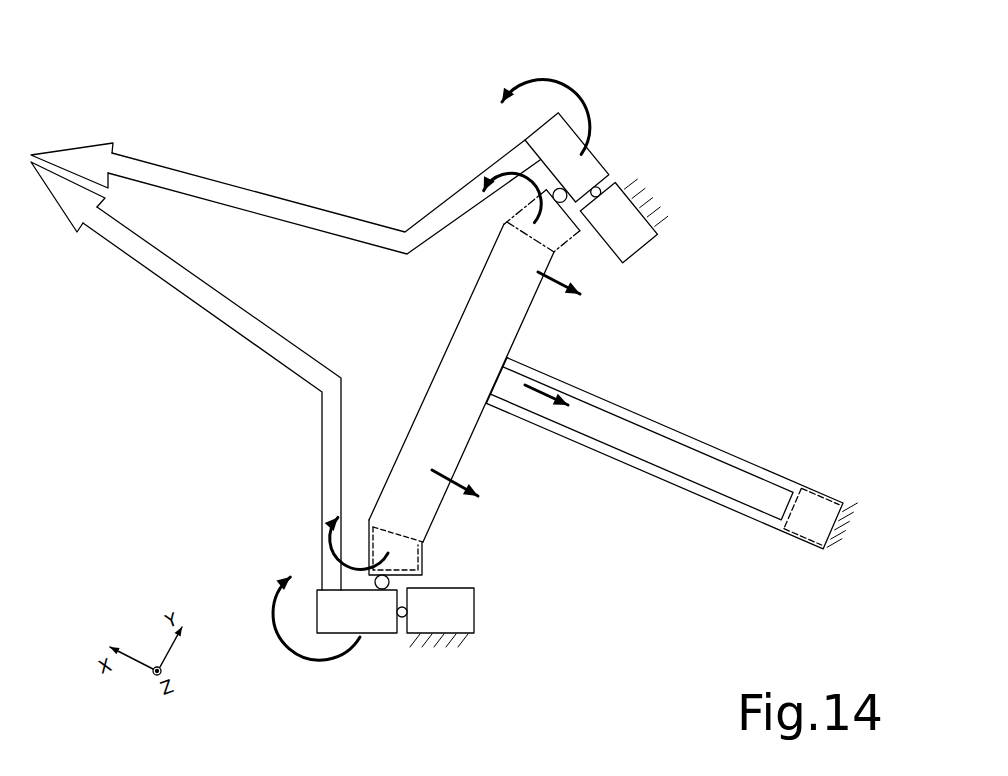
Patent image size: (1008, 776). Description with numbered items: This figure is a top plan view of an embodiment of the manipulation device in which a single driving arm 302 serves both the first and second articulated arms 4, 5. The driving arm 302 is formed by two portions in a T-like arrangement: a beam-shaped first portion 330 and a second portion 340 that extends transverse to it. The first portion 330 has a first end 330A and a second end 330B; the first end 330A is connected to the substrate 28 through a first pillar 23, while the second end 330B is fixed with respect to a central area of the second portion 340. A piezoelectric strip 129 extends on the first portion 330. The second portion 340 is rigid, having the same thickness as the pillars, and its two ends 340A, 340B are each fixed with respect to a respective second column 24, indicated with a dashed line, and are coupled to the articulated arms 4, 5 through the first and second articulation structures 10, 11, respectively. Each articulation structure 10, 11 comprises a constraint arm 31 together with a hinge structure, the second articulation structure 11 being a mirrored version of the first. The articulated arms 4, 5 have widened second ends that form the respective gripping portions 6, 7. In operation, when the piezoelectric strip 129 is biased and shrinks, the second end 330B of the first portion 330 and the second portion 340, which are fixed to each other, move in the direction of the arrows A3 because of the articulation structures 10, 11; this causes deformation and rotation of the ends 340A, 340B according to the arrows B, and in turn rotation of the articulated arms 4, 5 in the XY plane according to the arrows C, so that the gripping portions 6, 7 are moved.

The first articulated arm 4 is at (212, 190).
The second articulated arm 5 is at (203, 302).
The gripping portion 6 is at (80, 153).
The gripping portion 7 is at (65, 205).
The first articulation structure 10 is at (613, 177).
The second articulation structure 11 is at (397, 641).
The first pillar 23 is at (807, 543).
The second column 24 is at (423, 552).
The substrate 28 is at (442, 643).
The constraint arm 31 is at (467, 617).
The piezoelectric strip 129 is at (667, 453).
The driving arm 302 is at (567, 450).
The first portion 330 is at (748, 458).
The first end 330A is at (839, 498).
The second end 330B is at (498, 376).
The second portion 340 is at (472, 348).
The end 340A is at (366, 528).
The end 340B is at (563, 243).
The arrows A3 is at (527, 385).
The arrows B is at (510, 177).
The arrows C is at (551, 82).